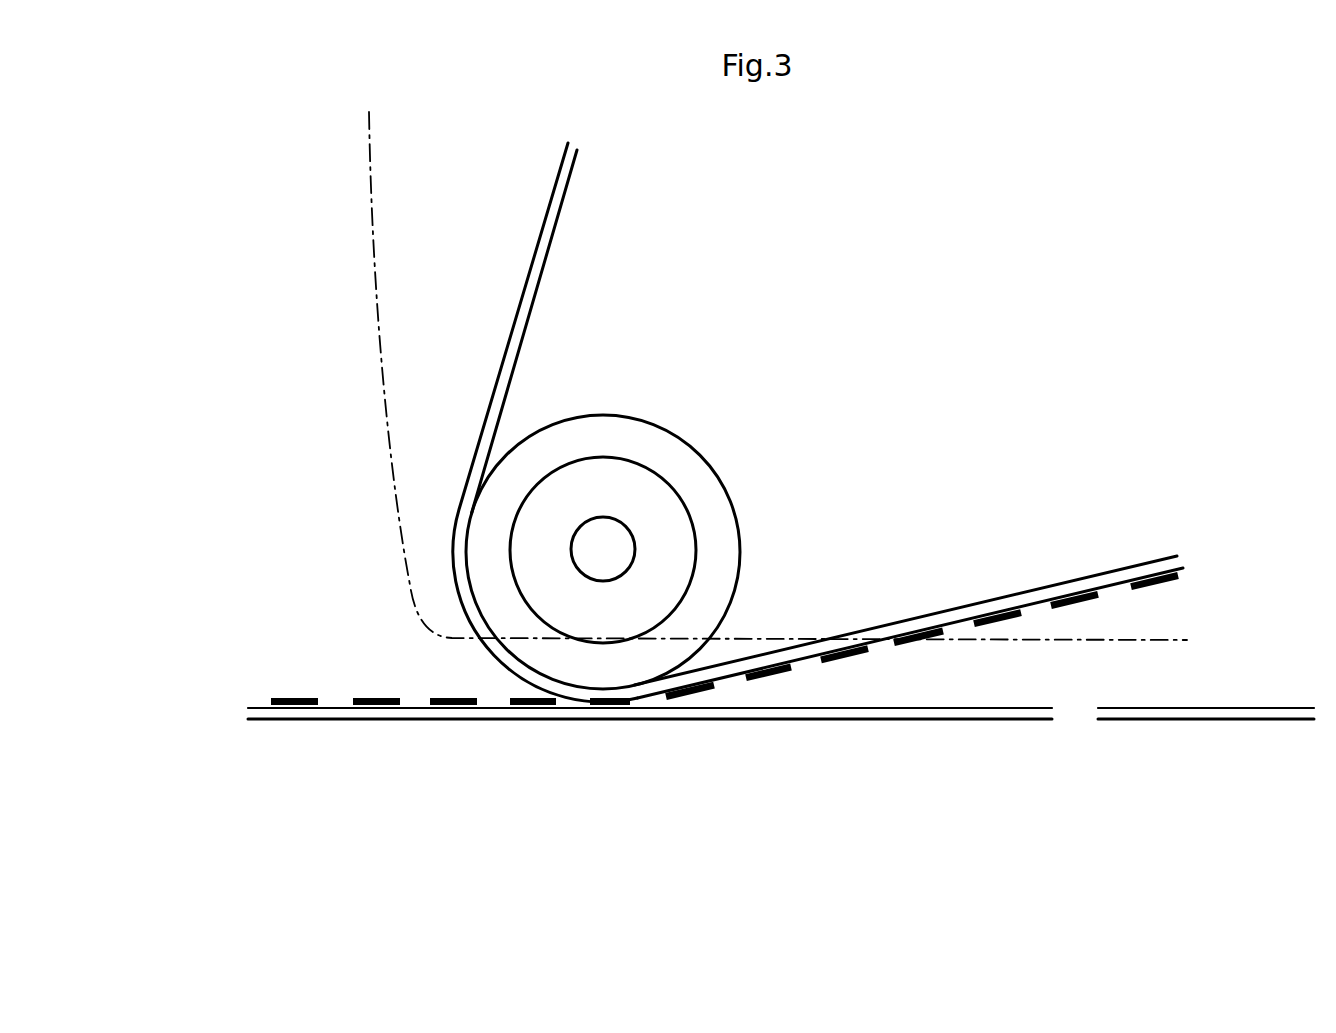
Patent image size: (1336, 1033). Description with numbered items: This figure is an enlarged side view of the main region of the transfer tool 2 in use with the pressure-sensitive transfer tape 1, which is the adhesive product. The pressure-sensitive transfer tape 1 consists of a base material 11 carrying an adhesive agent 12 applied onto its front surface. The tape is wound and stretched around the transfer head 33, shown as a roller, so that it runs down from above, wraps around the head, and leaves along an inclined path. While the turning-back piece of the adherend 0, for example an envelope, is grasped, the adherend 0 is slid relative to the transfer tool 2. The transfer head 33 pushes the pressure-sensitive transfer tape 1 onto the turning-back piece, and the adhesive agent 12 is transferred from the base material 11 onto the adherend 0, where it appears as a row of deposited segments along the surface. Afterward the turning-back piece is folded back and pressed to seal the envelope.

The adherend 0 is at (740, 721).
The pressure-sensitive transfer tape 1 is at (949, 610).
The transfer tool 2 is at (380, 377).
The base material 11 is at (514, 320).
The adhesive agent 12 is at (295, 721).
The transfer head 33 is at (603, 410).